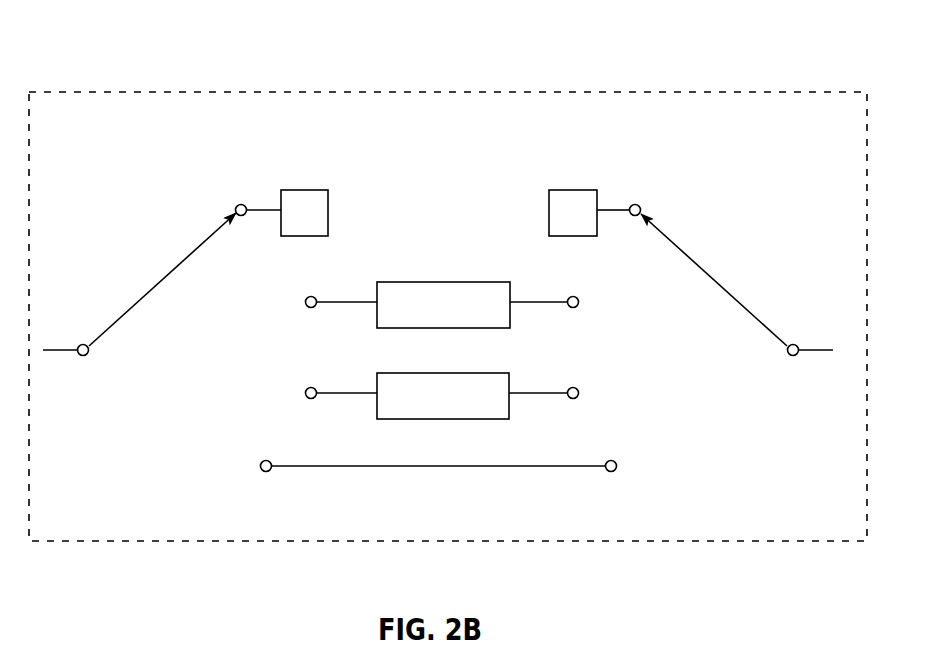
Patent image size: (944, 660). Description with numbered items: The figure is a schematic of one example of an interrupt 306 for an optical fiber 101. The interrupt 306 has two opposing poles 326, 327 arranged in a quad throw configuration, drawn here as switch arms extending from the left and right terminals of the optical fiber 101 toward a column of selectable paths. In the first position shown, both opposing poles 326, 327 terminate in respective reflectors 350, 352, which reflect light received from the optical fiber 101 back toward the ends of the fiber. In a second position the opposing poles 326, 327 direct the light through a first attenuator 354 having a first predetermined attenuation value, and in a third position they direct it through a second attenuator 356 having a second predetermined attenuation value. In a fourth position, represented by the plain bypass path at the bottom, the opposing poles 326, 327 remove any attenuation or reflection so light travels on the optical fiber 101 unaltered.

The interrupt 306 is at (464, 89).
The optical fiber 101 is at (66, 349).
The opposing pole 326 is at (164, 278).
The opposing pole 327 is at (714, 278).
The reflector 350 is at (303, 189).
The reflector 352 is at (573, 189).
The first attenuator 354 is at (443, 281).
The second attenuator 356 is at (443, 372).